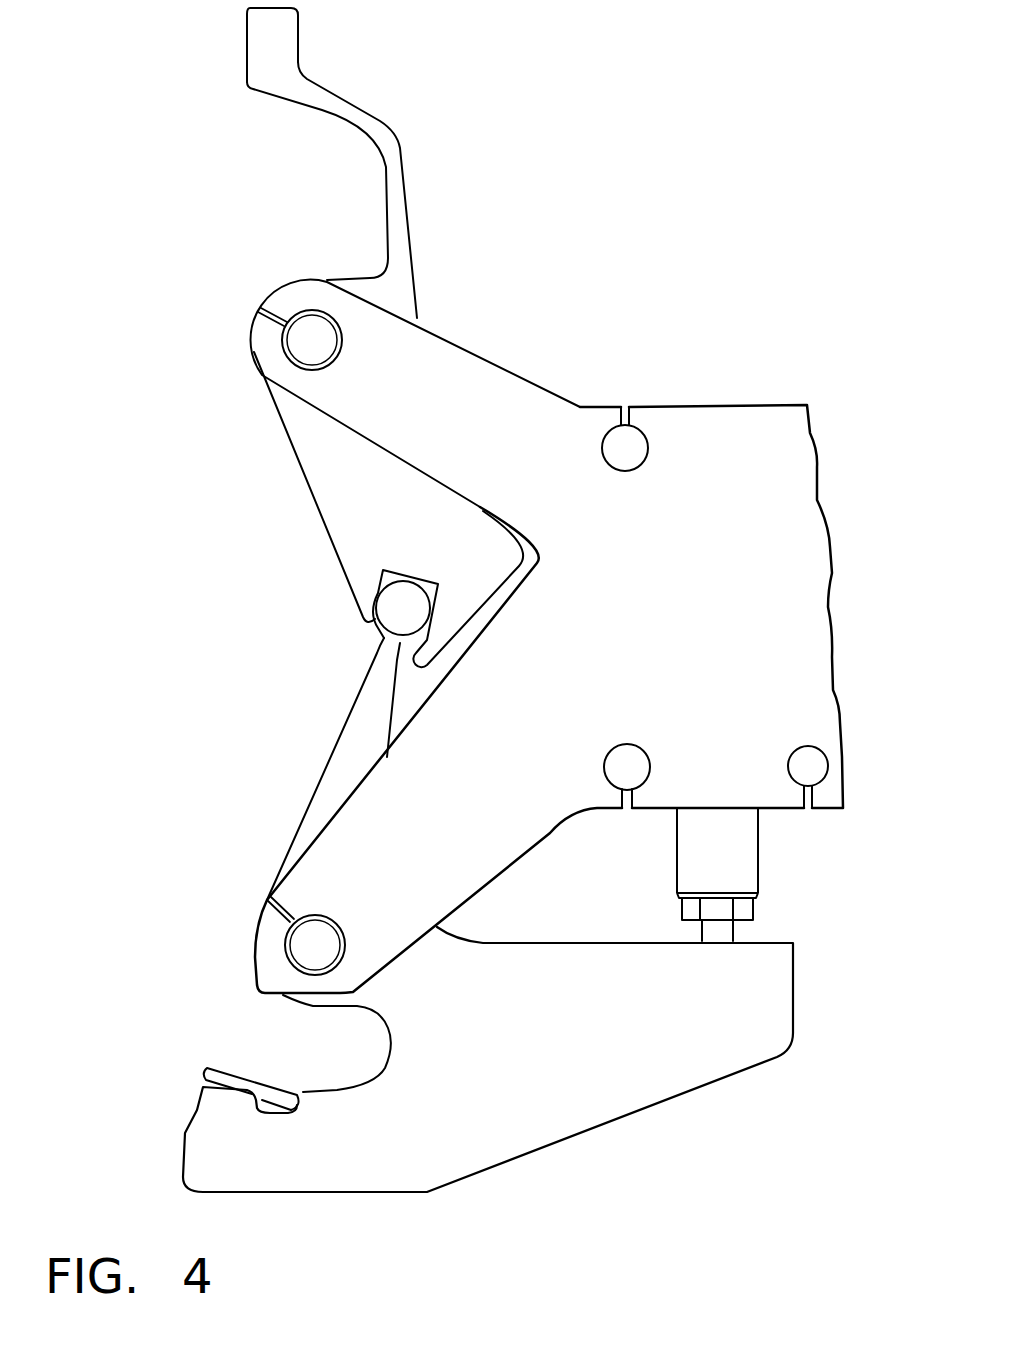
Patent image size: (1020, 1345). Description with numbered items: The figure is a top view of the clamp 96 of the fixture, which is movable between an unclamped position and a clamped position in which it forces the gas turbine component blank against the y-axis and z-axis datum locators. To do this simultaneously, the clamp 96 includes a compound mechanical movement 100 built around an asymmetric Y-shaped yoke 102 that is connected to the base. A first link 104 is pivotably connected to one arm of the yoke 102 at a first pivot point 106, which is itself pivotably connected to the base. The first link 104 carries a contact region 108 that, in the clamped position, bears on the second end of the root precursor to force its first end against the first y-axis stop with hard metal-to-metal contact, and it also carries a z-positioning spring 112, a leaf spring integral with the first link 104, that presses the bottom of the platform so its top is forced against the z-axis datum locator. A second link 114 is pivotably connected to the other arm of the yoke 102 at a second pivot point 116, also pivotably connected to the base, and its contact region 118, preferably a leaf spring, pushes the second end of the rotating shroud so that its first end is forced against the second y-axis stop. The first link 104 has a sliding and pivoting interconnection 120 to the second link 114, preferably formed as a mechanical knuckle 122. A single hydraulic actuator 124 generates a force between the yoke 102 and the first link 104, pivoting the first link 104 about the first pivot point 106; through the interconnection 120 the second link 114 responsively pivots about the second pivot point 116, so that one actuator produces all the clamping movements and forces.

The clamp 96 is at (491, 600).
The compound mechanical movement 100 is at (371, 491).
The asymmetric Y-shaped yoke 102 is at (768, 582).
The first link 104 is at (545, 1125).
The first pivot point 106 is at (305, 942).
The contact region 108 is at (183, 1150).
The z-positioning spring 112 is at (220, 1065).
The second link 114 is at (328, 163).
The second pivot point 116 is at (298, 345).
The contact region 118 is at (247, 53).
The sliding and pivoting interconnection 120 is at (350, 597).
The mechanical knuckle 122 is at (398, 614).
The hydraulic actuator 124 is at (742, 858).